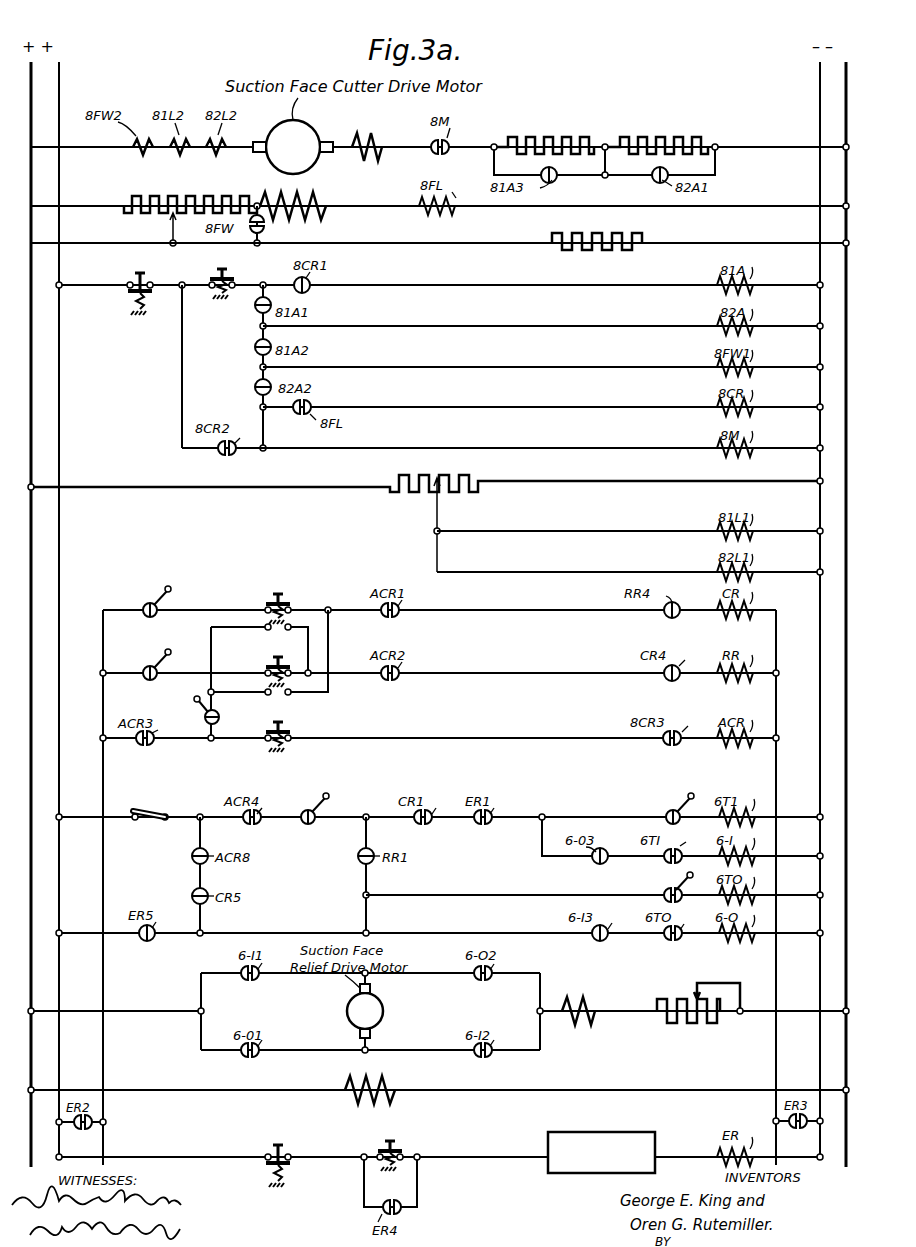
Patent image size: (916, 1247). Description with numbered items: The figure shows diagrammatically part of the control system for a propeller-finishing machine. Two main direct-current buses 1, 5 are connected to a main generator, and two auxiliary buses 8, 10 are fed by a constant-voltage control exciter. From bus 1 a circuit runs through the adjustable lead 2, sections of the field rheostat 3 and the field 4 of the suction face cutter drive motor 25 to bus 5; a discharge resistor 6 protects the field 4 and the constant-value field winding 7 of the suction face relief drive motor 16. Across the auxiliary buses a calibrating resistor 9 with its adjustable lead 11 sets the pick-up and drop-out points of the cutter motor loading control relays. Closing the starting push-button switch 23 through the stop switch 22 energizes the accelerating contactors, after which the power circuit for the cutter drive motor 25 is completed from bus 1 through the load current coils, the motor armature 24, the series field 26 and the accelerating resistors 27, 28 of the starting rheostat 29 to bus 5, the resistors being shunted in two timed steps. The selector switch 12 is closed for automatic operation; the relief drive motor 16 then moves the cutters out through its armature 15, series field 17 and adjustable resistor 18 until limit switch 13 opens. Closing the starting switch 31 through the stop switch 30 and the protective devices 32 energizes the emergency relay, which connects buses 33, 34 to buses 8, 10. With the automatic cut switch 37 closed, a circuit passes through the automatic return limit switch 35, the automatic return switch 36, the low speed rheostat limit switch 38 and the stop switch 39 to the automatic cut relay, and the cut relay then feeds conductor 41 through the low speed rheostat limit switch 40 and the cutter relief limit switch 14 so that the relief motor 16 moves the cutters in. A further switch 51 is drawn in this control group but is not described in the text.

The main bus 1 is at (31, 97).
The auxiliary bus 8 is at (59, 97).
The auxiliary bus 10 is at (820, 97).
The main bus 5 is at (846, 101).
The motor armature 24 is at (316, 134).
The suction face cutter drive motor 25 is at (271, 171).
The series field 26 is at (372, 134).
The accelerating resistor 27 is at (514, 134).
The accelerating resistor 28 is at (644, 134).
The starting rheostat 29 is at (604, 149).
The field rheostat 3 is at (190, 194).
The adjustable lead 2 is at (170, 226).
The field 4 is at (318, 192).
The resistor 6 is at (612, 252).
The stop switch 22 is at (148, 275).
The push-button switch 23 is at (228, 268).
The calibrating resistor 9 is at (424, 475).
The adjustable lead 11 is at (428, 519).
The bus 33 is at (105, 1068).
The bus 34 is at (776, 1060).
The automatic return limit switch 35 is at (158, 597).
The switch 51 is at (158, 660).
The automatic return switch 36 is at (286, 595).
The automatic cut switch 37 is at (272, 662).
The low speed rheostat limit switch 38 is at (198, 701).
The stop switch 39 is at (286, 723).
The selector switch 12 is at (150, 825).
The low speed rheostat limit switch 40 is at (328, 798).
The conductor 41 is at (548, 816).
The cutter relief limit switch 14 is at (674, 804).
The limit switch 13 is at (676, 877).
The armature 15 is at (344, 1004).
The suction face relief drive motor 16 is at (383, 1031).
The series field 17 is at (574, 1025).
The adjustable resistor 18 is at (672, 1025).
The field winding 7 is at (390, 1080).
The stop switch 30 is at (282, 1140).
The starting switch 31 is at (400, 1136).
The protective devices 32 is at (634, 1133).